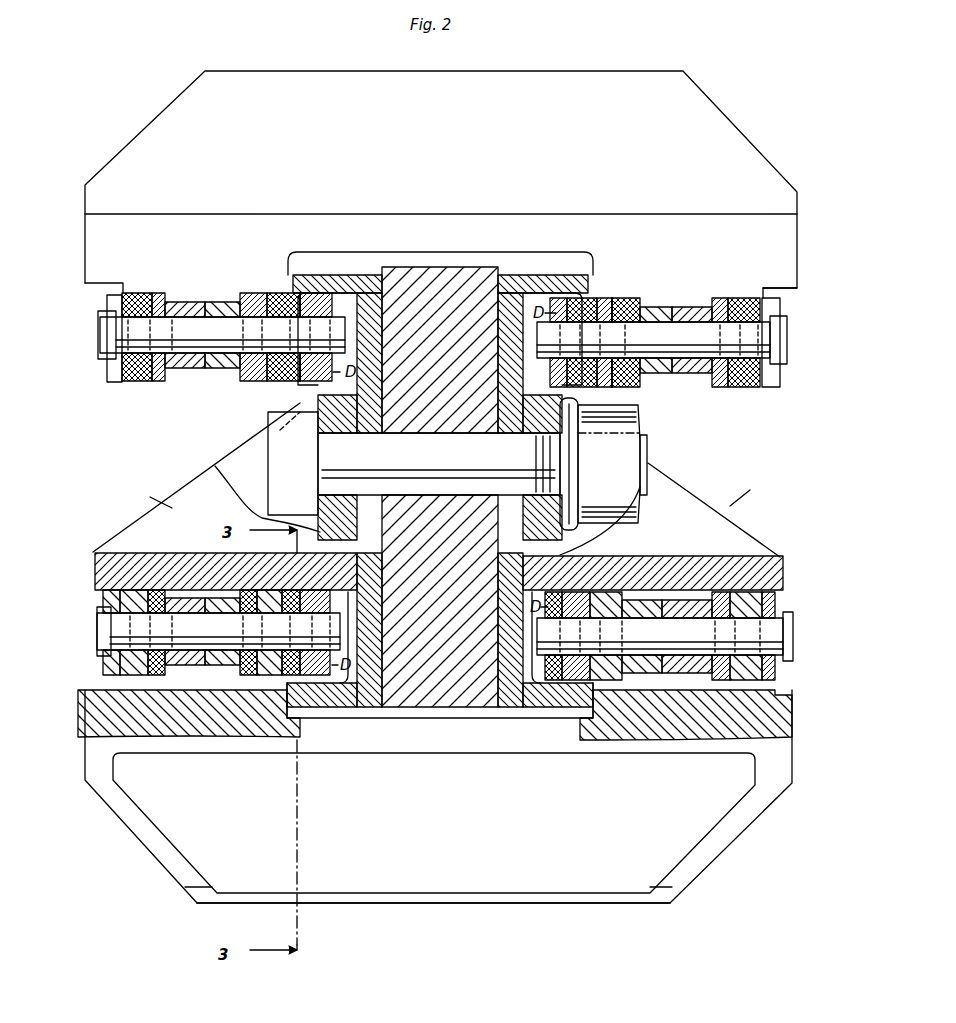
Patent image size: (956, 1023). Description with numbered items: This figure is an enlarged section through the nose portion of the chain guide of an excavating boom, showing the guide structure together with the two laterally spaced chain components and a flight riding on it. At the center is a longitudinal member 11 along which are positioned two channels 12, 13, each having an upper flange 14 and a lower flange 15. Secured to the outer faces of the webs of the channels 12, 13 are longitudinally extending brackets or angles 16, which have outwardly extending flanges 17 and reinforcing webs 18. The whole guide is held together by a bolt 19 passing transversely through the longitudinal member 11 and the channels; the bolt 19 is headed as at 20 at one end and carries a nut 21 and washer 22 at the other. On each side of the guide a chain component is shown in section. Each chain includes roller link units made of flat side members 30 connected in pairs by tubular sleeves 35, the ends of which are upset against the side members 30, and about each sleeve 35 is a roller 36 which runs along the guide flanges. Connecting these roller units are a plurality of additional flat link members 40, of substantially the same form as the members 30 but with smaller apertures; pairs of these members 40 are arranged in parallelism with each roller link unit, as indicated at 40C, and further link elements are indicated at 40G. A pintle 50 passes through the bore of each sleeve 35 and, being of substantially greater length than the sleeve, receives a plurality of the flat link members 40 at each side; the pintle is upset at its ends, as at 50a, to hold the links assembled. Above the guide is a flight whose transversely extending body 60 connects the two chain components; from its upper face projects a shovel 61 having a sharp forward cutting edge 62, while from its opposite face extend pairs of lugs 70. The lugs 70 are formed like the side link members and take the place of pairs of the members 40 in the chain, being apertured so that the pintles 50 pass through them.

The longitudinal member 11 is at (450, 705).
The channel 12 is at (318, 405).
The channel 13 is at (525, 400).
The upper flange 14 is at (332, 280).
The lower flange 15 is at (358, 707).
The bracket or angle 16 is at (215, 470).
The outwardly extending flange 17 is at (105, 560).
The reinforcing web 18 is at (441, 497).
The bolt 19 is at (439, 464).
The bolt head 20 is at (293, 463).
The nut 21 is at (632, 428).
The washer 22 is at (583, 403).
The link side member 30 is at (158, 382).
The tubular sleeve 35 is at (218, 370).
The roller 36 is at (195, 303).
The flat link member 40 is at (268, 293).
The pair of link members arranged in parallelism 40C is at (301, 293).
The friction disc G 40G is at (608, 298).
The pintle 50 is at (440, 486).
The upset pintle end 50a is at (100, 332).
The flight body 60 is at (448, 224).
The shovel 61 is at (460, 136).
The forward cutting edge 62 is at (448, 905).
The lug 70 is at (107, 296).